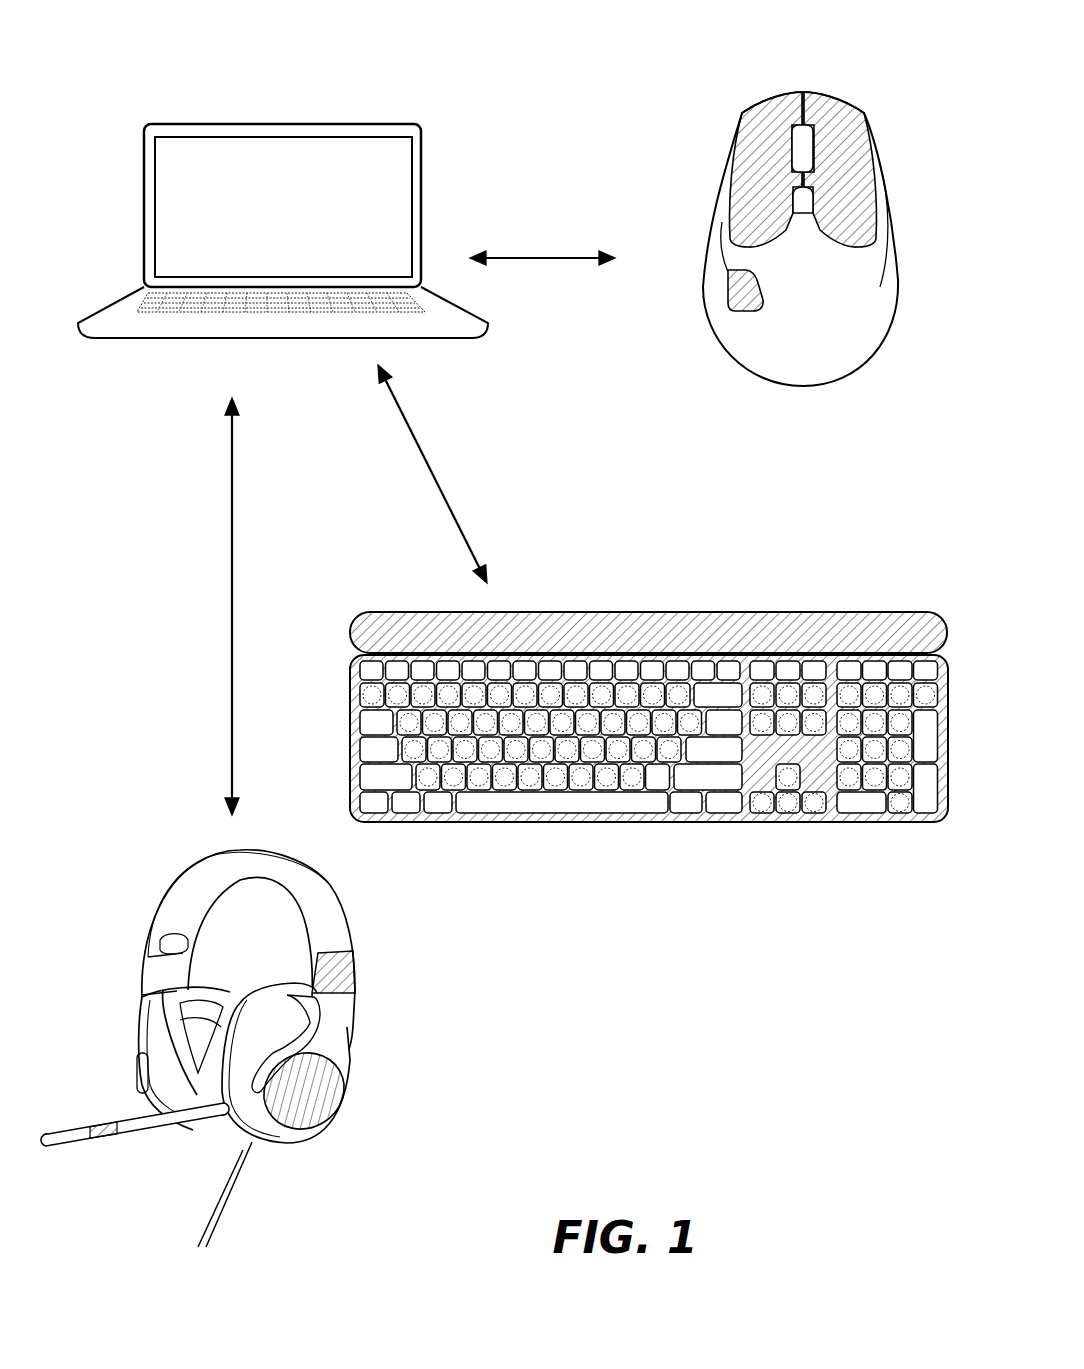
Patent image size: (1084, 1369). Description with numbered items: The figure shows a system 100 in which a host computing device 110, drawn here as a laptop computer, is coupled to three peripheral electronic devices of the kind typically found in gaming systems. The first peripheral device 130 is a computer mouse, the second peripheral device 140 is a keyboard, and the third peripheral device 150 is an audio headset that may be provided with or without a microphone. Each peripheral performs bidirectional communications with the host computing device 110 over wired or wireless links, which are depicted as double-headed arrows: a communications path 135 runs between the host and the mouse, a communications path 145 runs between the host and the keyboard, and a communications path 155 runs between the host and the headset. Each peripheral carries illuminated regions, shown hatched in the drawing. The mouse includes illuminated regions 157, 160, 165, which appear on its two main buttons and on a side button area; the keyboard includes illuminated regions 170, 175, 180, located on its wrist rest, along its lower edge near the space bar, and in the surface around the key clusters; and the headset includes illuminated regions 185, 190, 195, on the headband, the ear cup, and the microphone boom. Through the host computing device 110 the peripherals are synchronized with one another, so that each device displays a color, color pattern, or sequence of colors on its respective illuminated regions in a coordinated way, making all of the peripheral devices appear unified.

The system 100 is at (278, 54).
The host computing device 110 is at (383, 124).
The peripheral device (computer mouse) 130 is at (832, 98).
The communications path 135 is at (528, 258).
The peripheral device (keyboard) 140 is at (693, 612).
The communications path 145 is at (428, 462).
The peripheral device (audio headset) 150 is at (337, 1107).
The communications path 155 is at (232, 473).
The illuminated region 157 is at (750, 158).
The illuminated region 160 is at (850, 167).
The illuminated region 165 is at (740, 293).
The illuminated region 170 is at (537, 618).
The illuminated region 175 is at (657, 813).
The illuminated region 180 is at (820, 757).
The illuminated region 185 is at (347, 980).
The illuminated region 190 is at (332, 1080).
The illuminated region 195 is at (107, 1140).